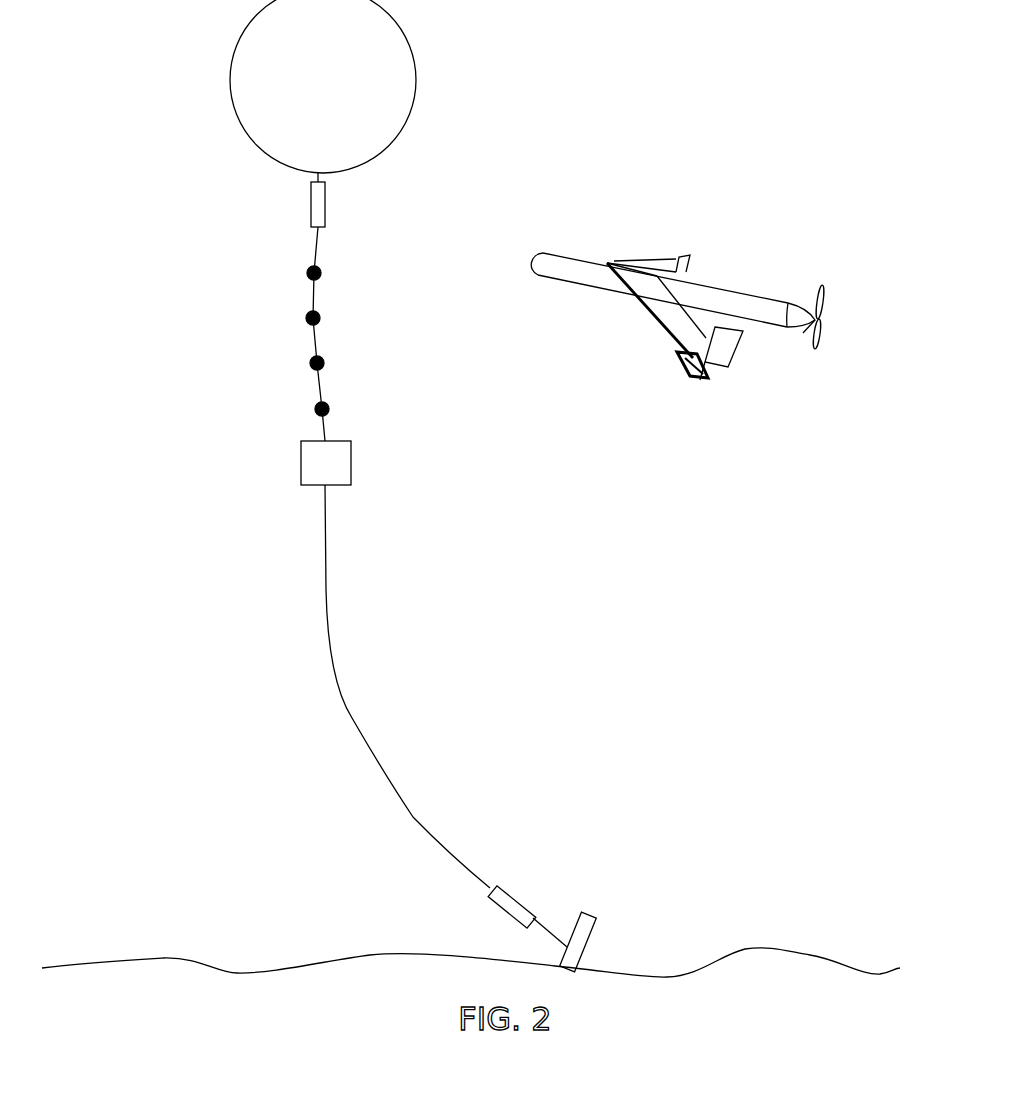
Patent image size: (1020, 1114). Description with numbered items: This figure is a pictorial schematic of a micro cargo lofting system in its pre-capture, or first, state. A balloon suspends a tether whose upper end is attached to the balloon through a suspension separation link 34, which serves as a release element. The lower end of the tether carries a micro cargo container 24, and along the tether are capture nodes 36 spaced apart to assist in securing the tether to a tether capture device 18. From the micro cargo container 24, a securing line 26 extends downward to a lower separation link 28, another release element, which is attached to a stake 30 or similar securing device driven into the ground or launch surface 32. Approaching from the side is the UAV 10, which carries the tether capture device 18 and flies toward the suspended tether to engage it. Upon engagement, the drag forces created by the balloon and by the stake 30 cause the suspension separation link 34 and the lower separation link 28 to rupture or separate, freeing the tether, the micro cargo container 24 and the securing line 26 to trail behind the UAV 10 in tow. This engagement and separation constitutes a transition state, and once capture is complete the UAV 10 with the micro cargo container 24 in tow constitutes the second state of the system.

The UAV 10 is at (722, 297).
The tether capture device 18 is at (702, 382).
The micro cargo container 24 is at (330, 454).
The securing line 26 is at (347, 707).
The lower separation link 28 is at (515, 898).
The stake 30 is at (585, 925).
The launch surface 32 is at (750, 945).
The suspension separation link 34 is at (311, 206).
The capture nodes 36 is at (316, 318).